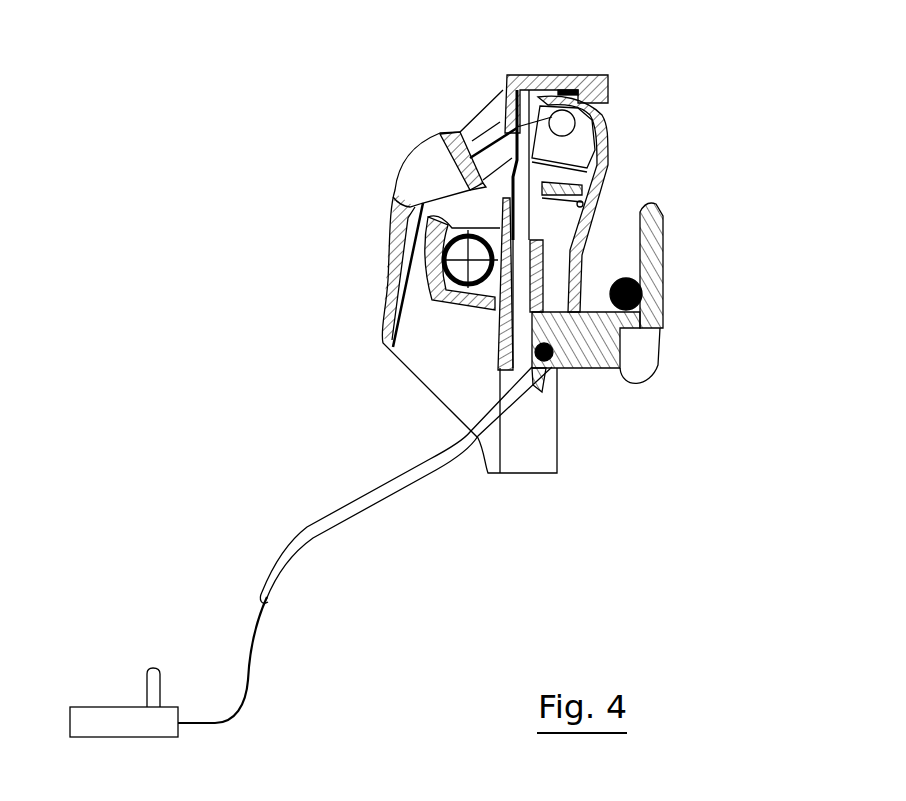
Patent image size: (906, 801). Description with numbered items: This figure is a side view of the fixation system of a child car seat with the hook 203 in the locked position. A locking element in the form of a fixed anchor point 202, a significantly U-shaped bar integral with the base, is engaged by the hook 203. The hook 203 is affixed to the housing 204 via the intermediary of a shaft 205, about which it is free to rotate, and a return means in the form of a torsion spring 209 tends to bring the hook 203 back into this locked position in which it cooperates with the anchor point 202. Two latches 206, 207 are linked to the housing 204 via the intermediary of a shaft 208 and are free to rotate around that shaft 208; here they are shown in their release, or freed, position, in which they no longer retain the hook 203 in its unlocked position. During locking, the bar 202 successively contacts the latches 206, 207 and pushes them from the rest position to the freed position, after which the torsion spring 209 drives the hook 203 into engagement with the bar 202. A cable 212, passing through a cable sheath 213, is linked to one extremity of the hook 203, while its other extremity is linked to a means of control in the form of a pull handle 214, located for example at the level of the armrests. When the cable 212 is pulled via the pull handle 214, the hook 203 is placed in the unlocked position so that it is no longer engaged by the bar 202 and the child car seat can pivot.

The anchor point 202 is at (660, 305).
The hook 203 is at (662, 223).
The housing 204 is at (443, 360).
The shaft 205 is at (437, 297).
The latch 206 is at (600, 198).
The latch 207 is at (664, 197).
The shaft 208 is at (500, 135).
The torsion spring 209 is at (413, 197).
The cable 212 is at (250, 680).
The cable sheath 213 is at (307, 527).
The pull handle 214 is at (104, 708).